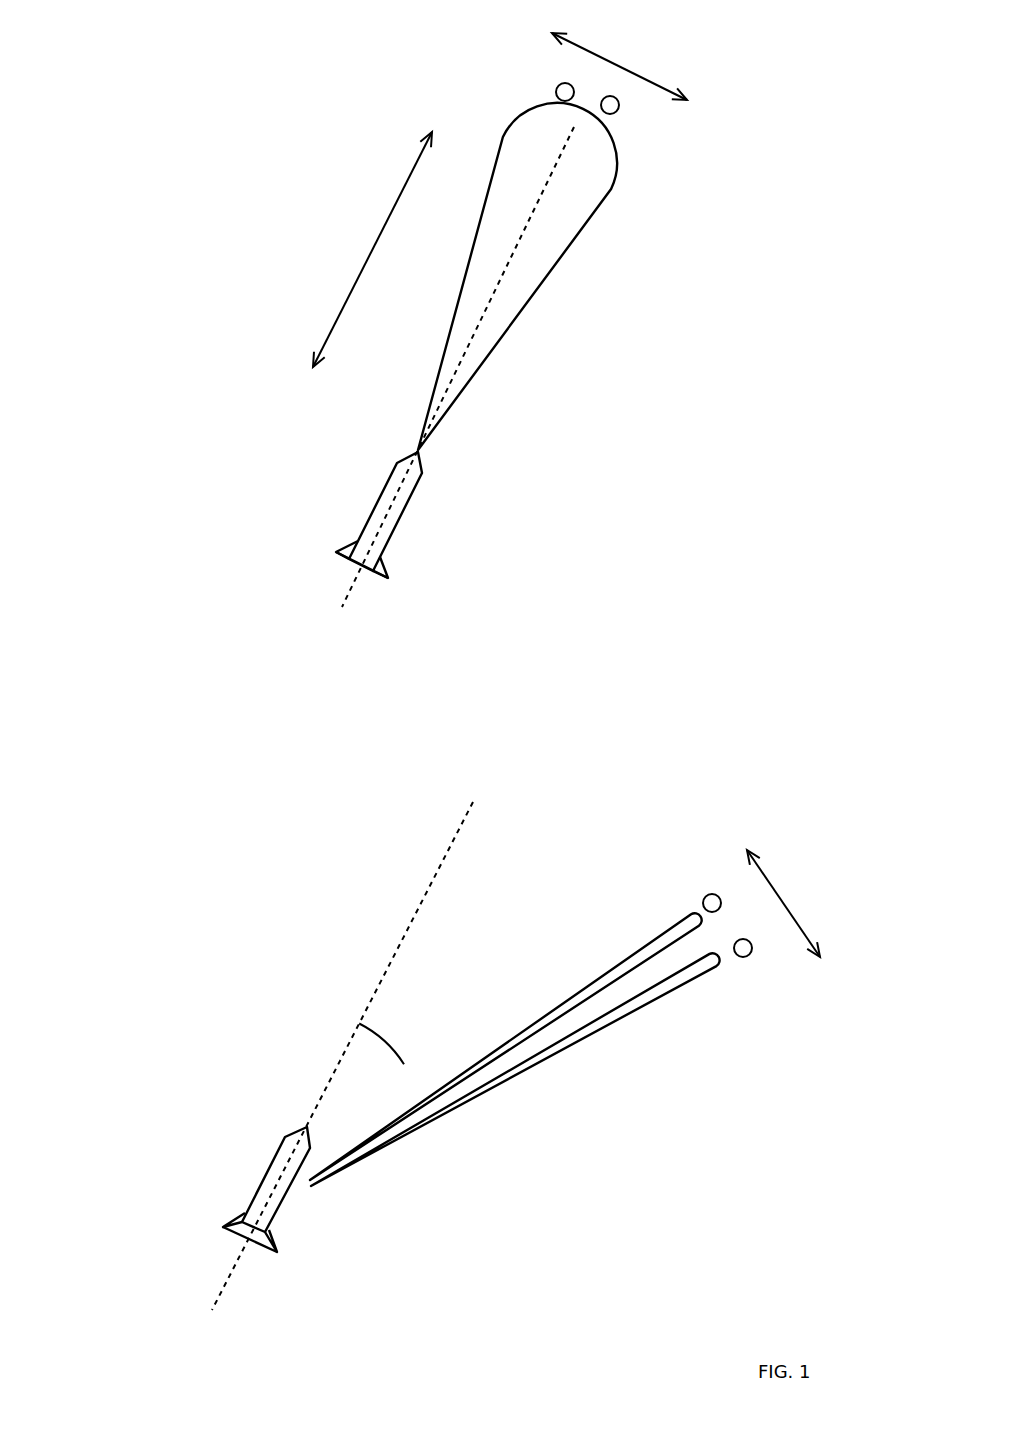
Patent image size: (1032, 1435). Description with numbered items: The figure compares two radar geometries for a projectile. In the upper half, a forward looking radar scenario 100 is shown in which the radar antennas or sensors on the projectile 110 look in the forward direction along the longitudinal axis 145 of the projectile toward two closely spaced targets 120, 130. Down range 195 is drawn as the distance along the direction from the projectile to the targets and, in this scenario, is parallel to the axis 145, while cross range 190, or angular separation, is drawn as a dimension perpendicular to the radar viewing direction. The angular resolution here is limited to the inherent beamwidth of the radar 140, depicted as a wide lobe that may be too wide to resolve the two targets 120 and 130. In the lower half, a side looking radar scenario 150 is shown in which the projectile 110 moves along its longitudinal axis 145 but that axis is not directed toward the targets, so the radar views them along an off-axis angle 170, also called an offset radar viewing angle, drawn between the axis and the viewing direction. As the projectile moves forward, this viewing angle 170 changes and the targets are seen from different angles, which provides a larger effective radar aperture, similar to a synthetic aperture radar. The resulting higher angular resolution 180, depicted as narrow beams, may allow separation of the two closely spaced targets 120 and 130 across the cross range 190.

The forward looking radar scenario 100 is at (140, 55).
The projectile 110 is at (233, 1148).
The target 120 is at (541, 72).
The target 130 is at (631, 140).
The inherent beamwidth of the radar 140 is at (556, 330).
The longitudinal axis 145 is at (393, 718).
The side looking radar scenario 150 is at (137, 813).
The off-axis angle 170 is at (316, 1035).
The higher angular resolution 180 is at (550, 1106).
The cross range 190 is at (691, 479).
The down range 195 is at (372, 249).